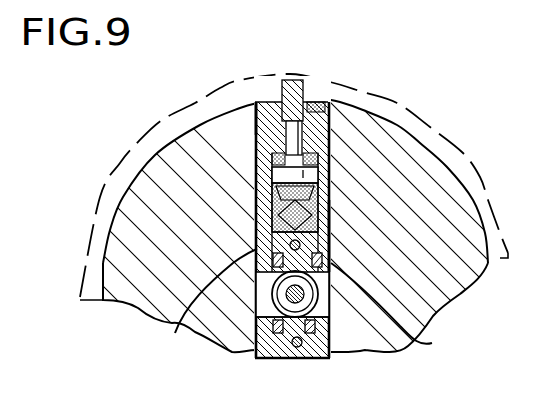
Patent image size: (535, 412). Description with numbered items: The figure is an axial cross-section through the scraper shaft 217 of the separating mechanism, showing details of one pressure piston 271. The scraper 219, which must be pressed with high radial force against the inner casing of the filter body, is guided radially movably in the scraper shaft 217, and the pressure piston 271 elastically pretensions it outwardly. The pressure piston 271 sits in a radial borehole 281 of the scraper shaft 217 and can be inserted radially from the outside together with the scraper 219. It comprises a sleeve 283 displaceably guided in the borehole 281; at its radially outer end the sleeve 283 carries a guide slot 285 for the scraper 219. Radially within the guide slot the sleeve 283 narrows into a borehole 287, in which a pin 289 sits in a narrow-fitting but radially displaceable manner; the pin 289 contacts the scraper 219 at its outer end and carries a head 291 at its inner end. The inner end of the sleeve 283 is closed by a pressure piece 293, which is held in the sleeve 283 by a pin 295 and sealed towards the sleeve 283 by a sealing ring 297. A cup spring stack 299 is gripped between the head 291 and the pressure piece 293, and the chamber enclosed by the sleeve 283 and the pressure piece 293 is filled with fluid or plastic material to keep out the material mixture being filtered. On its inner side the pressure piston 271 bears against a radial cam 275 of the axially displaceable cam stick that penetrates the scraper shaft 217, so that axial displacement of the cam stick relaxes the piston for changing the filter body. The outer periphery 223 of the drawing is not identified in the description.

The scraper shaft 217 is at (410, 148).
The scraper 219 is at (296, 76).
The outer periphery 223 is at (390, 104).
The pressure piston 271 is at (276, 90).
The radial cam 275 is at (330, 298).
The radial borehole 281 is at (329, 236).
The sleeve 283 is at (327, 213).
The guide slot 285 is at (324, 102).
The borehole 287 is at (254, 104).
The pin 289 is at (257, 158).
The head 291 is at (272, 174).
The pressure piece 293 is at (273, 233).
The pin 295 is at (203, 306).
The sealing ring 297 is at (396, 308).
The cup spring stack 299 is at (300, 233).